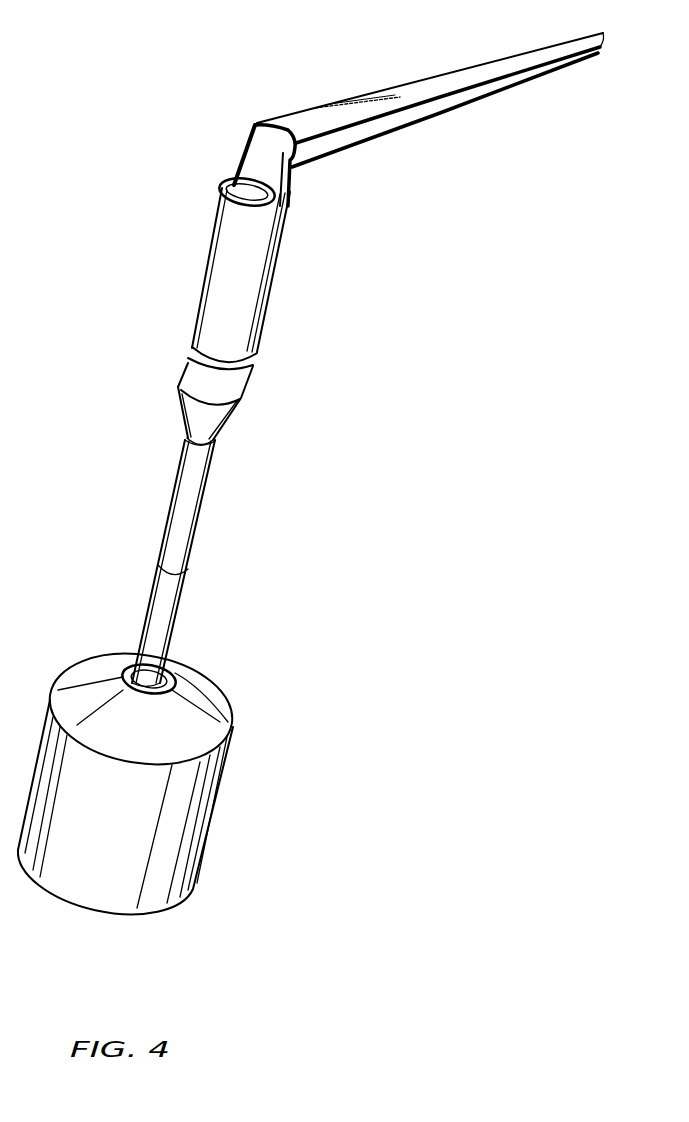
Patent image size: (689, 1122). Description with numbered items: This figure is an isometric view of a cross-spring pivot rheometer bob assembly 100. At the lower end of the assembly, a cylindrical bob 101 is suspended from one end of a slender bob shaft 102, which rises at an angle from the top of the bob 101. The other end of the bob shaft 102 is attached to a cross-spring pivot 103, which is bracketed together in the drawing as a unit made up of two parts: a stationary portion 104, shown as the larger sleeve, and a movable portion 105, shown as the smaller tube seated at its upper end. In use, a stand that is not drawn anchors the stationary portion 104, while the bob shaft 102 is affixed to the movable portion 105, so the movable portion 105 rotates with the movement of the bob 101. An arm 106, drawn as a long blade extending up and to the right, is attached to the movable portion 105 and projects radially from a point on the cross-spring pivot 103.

The cross-spring pivot rheometer bob assembly 100 is at (82, 100).
The bob 101 is at (214, 820).
The bob shaft 102 is at (208, 500).
The cross-spring pivot 103 is at (398, 292).
The stationary portion 104 is at (291, 255).
The movable portion 105 is at (296, 186).
The arm 106 is at (417, 90).